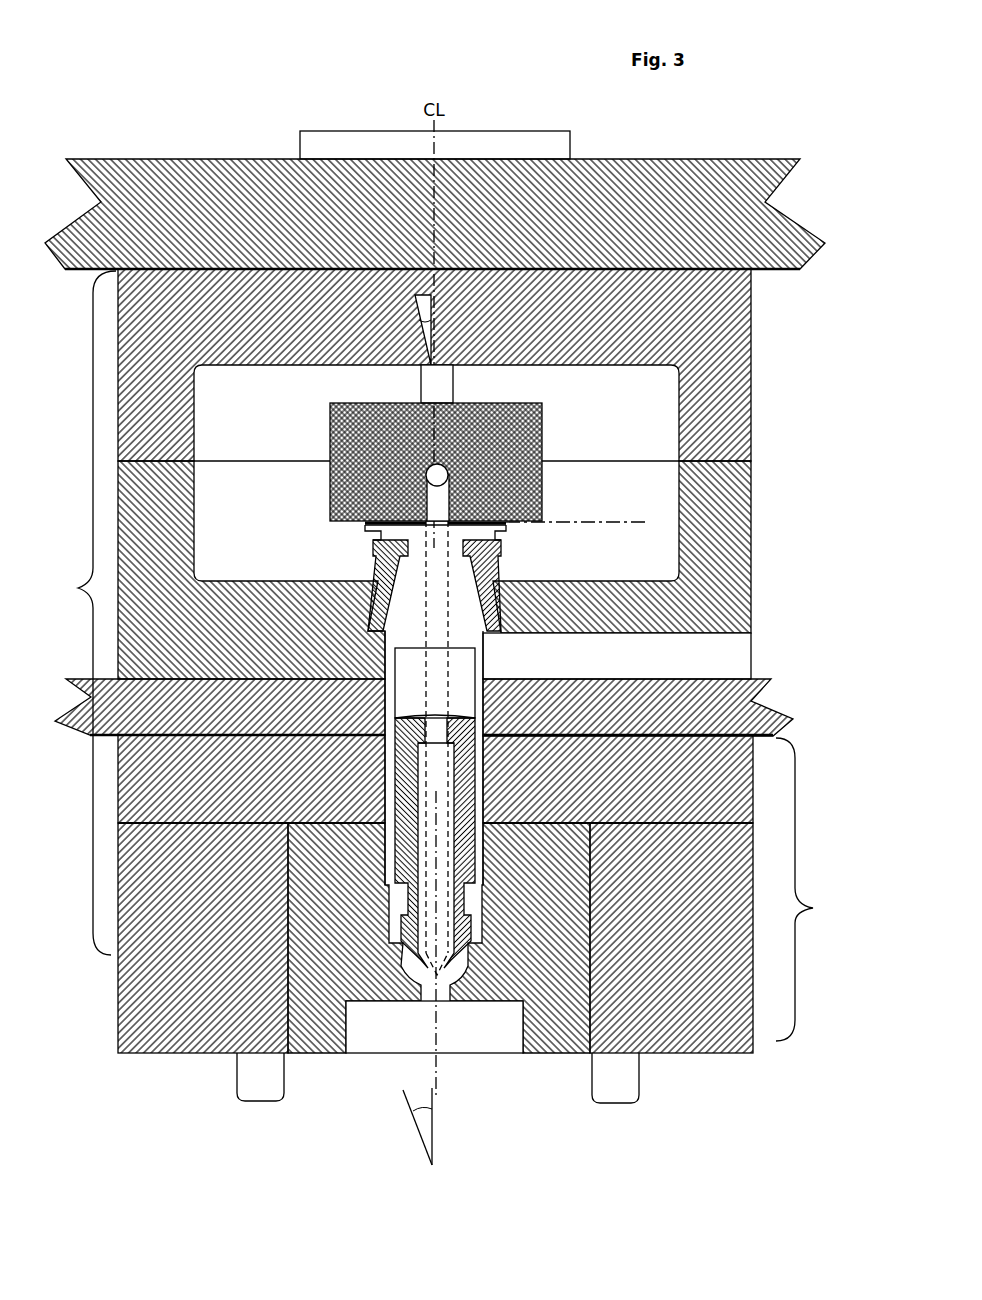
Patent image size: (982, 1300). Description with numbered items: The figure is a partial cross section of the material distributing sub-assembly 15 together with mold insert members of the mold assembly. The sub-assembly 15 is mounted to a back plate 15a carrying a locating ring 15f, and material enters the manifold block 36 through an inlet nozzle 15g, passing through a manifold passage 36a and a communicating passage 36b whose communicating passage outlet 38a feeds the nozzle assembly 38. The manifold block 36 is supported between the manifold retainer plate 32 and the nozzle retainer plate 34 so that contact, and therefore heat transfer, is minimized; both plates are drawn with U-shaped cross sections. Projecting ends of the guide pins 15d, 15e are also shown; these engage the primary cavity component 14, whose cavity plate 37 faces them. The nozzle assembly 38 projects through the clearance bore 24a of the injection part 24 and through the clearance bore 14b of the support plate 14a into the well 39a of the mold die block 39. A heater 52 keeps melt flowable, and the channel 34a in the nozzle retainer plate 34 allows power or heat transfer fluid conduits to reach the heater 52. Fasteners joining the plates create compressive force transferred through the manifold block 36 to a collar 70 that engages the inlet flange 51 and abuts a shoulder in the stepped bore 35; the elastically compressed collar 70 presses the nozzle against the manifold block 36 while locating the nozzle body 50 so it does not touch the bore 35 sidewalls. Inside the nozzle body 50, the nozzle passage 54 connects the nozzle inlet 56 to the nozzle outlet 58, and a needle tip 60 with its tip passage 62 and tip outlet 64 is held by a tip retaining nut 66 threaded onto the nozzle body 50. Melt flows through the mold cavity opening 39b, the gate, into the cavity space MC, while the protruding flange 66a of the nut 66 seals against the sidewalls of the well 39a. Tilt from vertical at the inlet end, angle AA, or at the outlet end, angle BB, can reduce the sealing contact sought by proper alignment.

The primary cavity component 14 is at (801, 889).
The support plate 14a is at (435, 779).
The clearance bore 14b is at (384, 774).
The material distributing sub-assembly 15 is at (86, 613).
The back plate 15a is at (435, 214).
The guide pin 15d is at (617, 1088).
The guide pin 15e is at (243, 1082).
The locating ring 15f is at (435, 145).
The inlet nozzle 15g is at (447, 386).
The injection part 24 is at (424, 707).
The clearance bore 24a is at (384, 708).
The manifold retainer plate 32 is at (434, 365).
The nozzle retainer plate 34 is at (434, 570).
The channel 34a is at (617, 656).
The bore 35 is at (362, 570).
The manifold block 36 is at (436, 462).
The manifold passage 36a is at (424, 460).
The communicating passage 36b is at (441, 488).
The cavity plate 37 is at (435, 938).
The nozzle assembly 38 is at (512, 553).
The communicating passage outlet 38a is at (423, 510).
The mold die block 39 is at (439, 938).
The well 39a is at (381, 917).
The mold cavity opening 39b is at (432, 998).
The nozzle body 50 is at (452, 728).
The flange 51 is at (362, 520).
The heater 52 is at (452, 684).
The nozzle passage 54 is at (420, 628).
The nozzle inlet 56 is at (434, 522).
The nozzle outlet 58 is at (440, 740).
The needle tip 60 is at (405, 788).
The tip passage 62 is at (455, 862).
The tip outlet 64 is at (462, 930).
The tip retaining nut 66 is at (397, 874).
The protruding flange 66a is at (396, 947).
The collar 70 is at (490, 630).
The cavity space MC is at (434, 1027).
The angle AA is at (404, 302).
The angle BB is at (415, 1098).